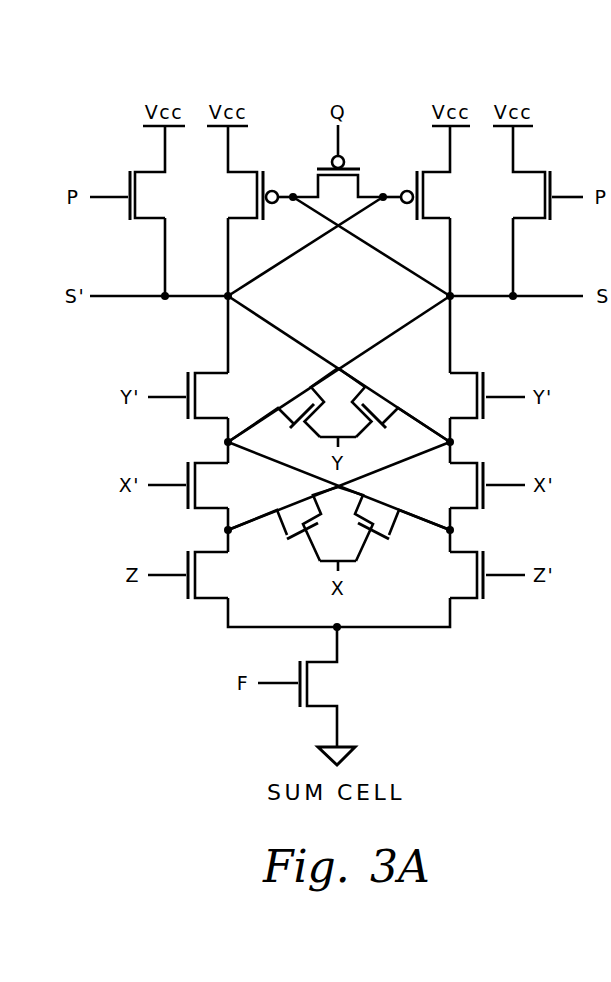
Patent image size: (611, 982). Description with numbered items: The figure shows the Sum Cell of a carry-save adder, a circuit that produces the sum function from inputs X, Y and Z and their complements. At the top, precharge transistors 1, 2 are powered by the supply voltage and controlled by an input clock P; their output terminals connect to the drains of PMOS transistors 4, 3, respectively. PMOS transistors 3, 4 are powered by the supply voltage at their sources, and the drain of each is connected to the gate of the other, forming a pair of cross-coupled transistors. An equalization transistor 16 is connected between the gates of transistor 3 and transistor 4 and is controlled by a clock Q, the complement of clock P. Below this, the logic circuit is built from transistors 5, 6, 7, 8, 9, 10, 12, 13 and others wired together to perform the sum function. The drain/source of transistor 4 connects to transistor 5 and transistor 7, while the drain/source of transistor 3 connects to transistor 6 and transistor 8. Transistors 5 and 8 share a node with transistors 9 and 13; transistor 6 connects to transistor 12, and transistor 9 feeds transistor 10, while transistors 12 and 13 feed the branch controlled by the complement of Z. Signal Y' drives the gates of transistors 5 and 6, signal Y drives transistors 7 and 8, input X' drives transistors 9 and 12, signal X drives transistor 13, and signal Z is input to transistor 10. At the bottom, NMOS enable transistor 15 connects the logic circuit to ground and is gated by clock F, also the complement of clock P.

The precharge transistor 1 is at (148, 172).
The precharge transistor 2 is at (536, 172).
The PMOS transistor 3 is at (437, 172).
The PMOS transistor 4 is at (250, 172).
The transistor 5 is at (210, 373).
The transistor 6 is at (466, 373).
The transistor 7 is at (393, 418).
The transistor 8 is at (283, 418).
The transistor 9 is at (208, 463).
The transistor 10 is at (209, 552).
The transistor 12 is at (466, 463).
The transistor 13 is at (404, 531).
The enable transistor 15 is at (308, 708).
The equalization transistor 16 is at (360, 186).